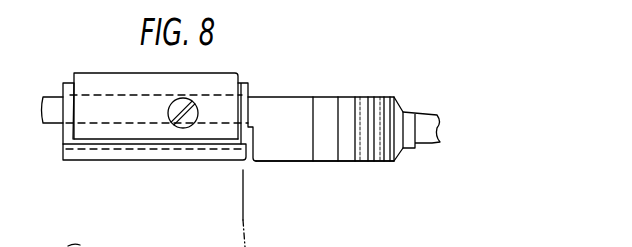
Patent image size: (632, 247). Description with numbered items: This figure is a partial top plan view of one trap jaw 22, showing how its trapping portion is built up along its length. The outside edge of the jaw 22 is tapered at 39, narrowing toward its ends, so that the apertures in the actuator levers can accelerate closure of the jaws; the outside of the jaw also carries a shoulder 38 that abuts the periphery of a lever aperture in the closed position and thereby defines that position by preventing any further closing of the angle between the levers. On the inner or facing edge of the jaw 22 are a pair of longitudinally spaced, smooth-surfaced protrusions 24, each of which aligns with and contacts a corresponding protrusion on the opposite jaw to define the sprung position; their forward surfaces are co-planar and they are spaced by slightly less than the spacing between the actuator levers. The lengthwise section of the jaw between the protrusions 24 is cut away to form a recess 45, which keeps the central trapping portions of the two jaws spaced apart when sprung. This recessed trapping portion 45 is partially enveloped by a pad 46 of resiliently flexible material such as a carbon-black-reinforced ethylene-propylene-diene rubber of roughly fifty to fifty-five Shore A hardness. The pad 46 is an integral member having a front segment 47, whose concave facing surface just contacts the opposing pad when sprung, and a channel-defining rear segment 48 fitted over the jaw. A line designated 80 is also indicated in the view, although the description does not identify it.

The jaw 22 is at (345, 107).
The protrusions 24 is at (342, 161).
The shoulder 38 is at (391, 106).
The taper 39 is at (425, 111).
The recess 45 is at (49, 126).
The pad 46 is at (258, 76).
The front segment 47 is at (61, 159).
The channel-defining rear segment 48 is at (70, 82).
The axis line 80 is at (250, 243).